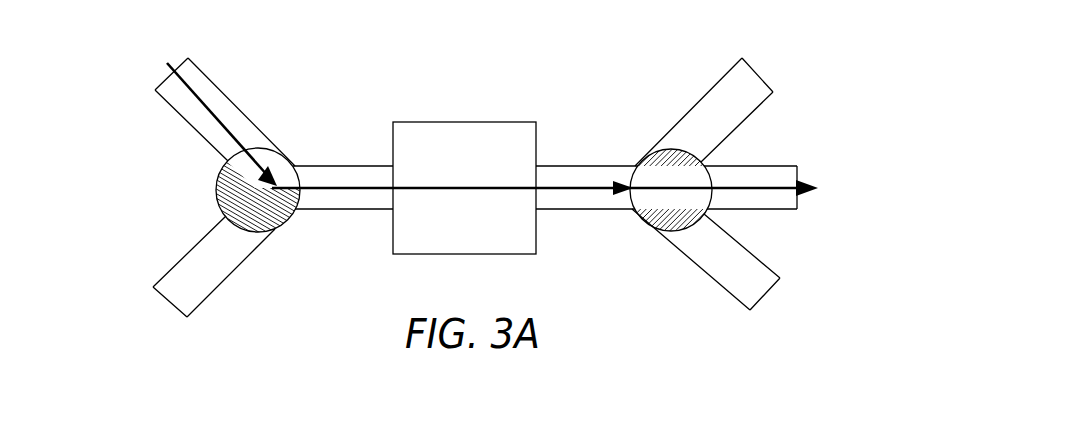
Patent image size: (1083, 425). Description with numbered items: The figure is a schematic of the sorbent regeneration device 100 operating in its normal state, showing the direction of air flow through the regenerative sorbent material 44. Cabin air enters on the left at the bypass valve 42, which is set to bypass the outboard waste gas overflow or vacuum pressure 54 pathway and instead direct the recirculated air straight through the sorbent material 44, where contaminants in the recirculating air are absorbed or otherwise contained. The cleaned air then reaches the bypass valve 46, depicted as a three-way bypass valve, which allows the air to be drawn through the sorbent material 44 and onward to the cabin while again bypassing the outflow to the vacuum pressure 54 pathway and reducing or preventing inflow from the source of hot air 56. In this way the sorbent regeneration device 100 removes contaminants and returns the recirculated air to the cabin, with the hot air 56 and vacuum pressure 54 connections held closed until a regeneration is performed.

The sorbent regeneration device 100 is at (47, 175).
The bypass valve 42 is at (288, 152).
The regenerative sorbent material 44 is at (473, 168).
The bypass valve 46 is at (643, 156).
The vacuum pressure 54 is at (168, 399).
The hot air 56 is at (805, 359).